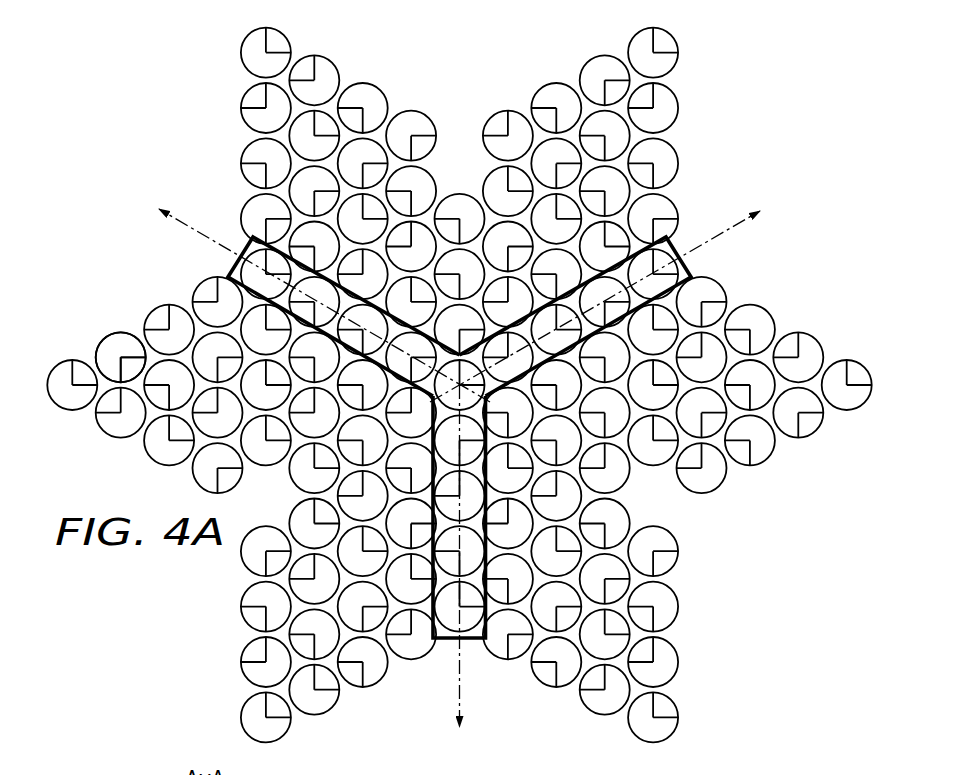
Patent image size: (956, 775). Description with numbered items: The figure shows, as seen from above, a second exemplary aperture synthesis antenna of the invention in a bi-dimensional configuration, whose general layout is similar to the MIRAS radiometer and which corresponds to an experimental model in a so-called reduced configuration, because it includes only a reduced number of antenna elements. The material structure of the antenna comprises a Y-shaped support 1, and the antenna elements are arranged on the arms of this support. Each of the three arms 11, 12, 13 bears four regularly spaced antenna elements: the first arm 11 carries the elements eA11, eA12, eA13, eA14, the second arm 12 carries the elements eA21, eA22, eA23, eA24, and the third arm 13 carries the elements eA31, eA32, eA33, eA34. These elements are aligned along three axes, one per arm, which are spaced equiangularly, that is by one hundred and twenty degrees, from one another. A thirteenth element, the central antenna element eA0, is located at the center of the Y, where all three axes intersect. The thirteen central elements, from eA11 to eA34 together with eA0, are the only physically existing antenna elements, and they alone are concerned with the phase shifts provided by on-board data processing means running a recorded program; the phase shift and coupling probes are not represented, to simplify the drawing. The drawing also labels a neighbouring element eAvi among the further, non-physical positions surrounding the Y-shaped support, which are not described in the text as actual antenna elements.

The Y-shaped support 1 is at (468, 400).
The arm 11 is at (669, 238).
The arm 12 is at (473, 643).
The arm 13 is at (230, 270).
The central antenna element eA0 is at (433, 398).
The antenna element eA11 is at (489, 314).
The antenna element eA12 is at (565, 352).
The antenna element eA13 is at (613, 323).
The antenna element eA14 is at (688, 281).
The antenna element eA21 is at (433, 440).
The antenna element eA22 is at (433, 500).
The antenna element eA23 is at (433, 565).
The antenna element eA24 is at (450, 626).
The antenna element eA31 is at (480, 337).
The antenna element eA32 is at (340, 338).
The antenna element eA33 is at (340, 288).
The antenna element eA34 is at (243, 242).
The neighbouring antenna element eAvi is at (112, 322).